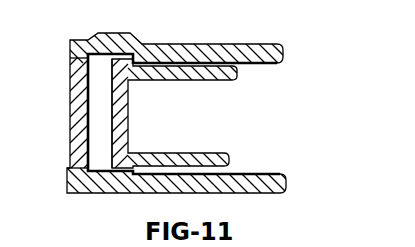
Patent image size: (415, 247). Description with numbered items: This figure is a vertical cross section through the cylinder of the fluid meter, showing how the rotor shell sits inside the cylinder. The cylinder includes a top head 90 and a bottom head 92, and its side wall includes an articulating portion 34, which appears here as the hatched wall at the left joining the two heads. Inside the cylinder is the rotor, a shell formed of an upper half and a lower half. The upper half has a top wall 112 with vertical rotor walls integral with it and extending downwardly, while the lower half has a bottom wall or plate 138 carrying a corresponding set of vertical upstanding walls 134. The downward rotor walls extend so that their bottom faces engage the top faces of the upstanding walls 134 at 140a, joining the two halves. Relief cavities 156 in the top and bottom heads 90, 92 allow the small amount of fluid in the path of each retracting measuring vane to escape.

The articulating portion 34 is at (78, 95).
The top head 90 is at (181, 48).
The bottom head 92 is at (190, 182).
The top wall 112 is at (208, 74).
The vertical upstanding wall 134 is at (127, 142).
The bottom wall 138 is at (200, 155).
The engagement location 140a is at (112, 130).
The relief cavity 156 is at (102, 58).